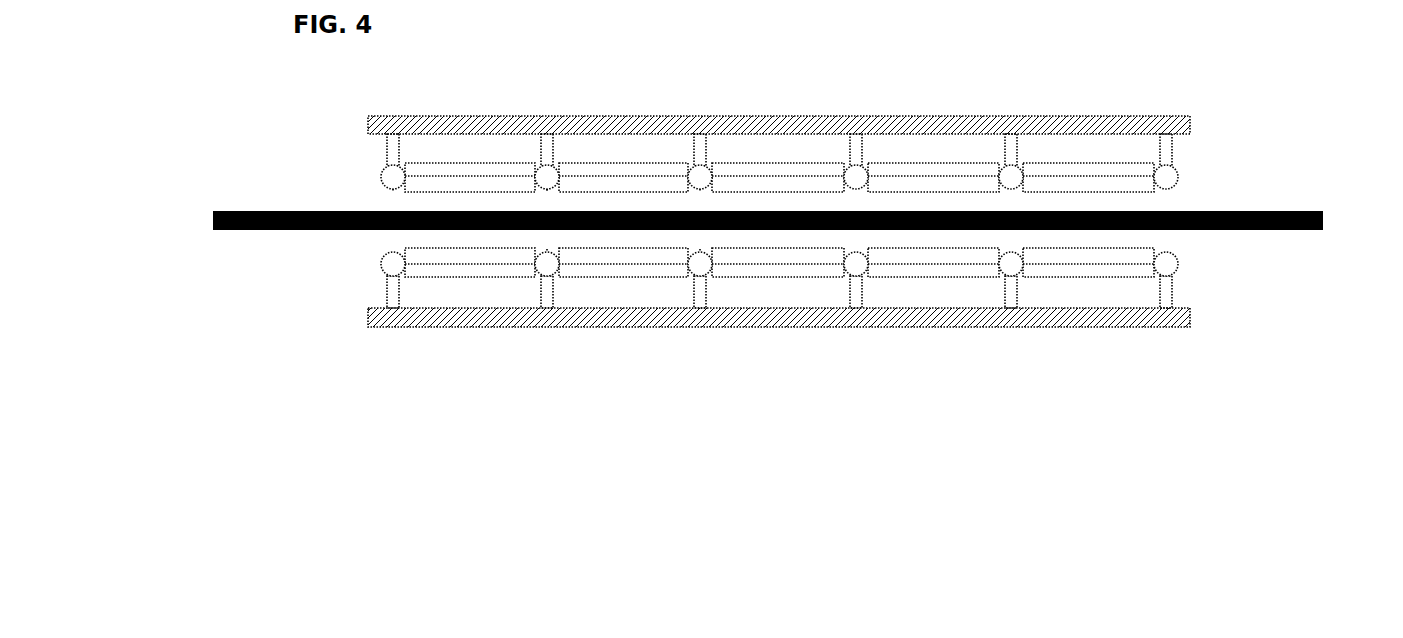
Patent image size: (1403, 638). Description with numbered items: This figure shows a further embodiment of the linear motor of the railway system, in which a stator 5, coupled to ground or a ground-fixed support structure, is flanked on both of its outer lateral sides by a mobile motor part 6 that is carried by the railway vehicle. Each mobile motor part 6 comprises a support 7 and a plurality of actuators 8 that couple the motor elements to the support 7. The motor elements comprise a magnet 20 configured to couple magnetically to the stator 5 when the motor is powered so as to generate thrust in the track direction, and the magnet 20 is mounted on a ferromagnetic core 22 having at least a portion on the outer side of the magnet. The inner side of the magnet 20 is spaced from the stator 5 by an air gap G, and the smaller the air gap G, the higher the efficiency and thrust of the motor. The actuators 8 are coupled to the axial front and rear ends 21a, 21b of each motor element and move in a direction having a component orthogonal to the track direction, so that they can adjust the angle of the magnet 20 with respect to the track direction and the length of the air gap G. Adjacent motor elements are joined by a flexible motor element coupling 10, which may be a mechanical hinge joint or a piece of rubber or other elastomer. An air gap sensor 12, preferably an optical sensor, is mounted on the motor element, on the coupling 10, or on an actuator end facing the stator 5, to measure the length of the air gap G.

The stator 5 is at (1270, 257).
The mobile motor part 6 is at (1084, 88).
The support 7 is at (900, 125).
The actuator 8 is at (853, 150).
The flexible motor element coupling 10 is at (855, 178).
The air gap sensor 12 is at (548, 188).
The magnet 20 is at (1110, 185).
The ferromagnetic core 22 is at (1060, 168).
The axial front end 21a is at (403, 192).
The axial rear end 21b is at (548, 186).
The air gap G is at (1142, 203).